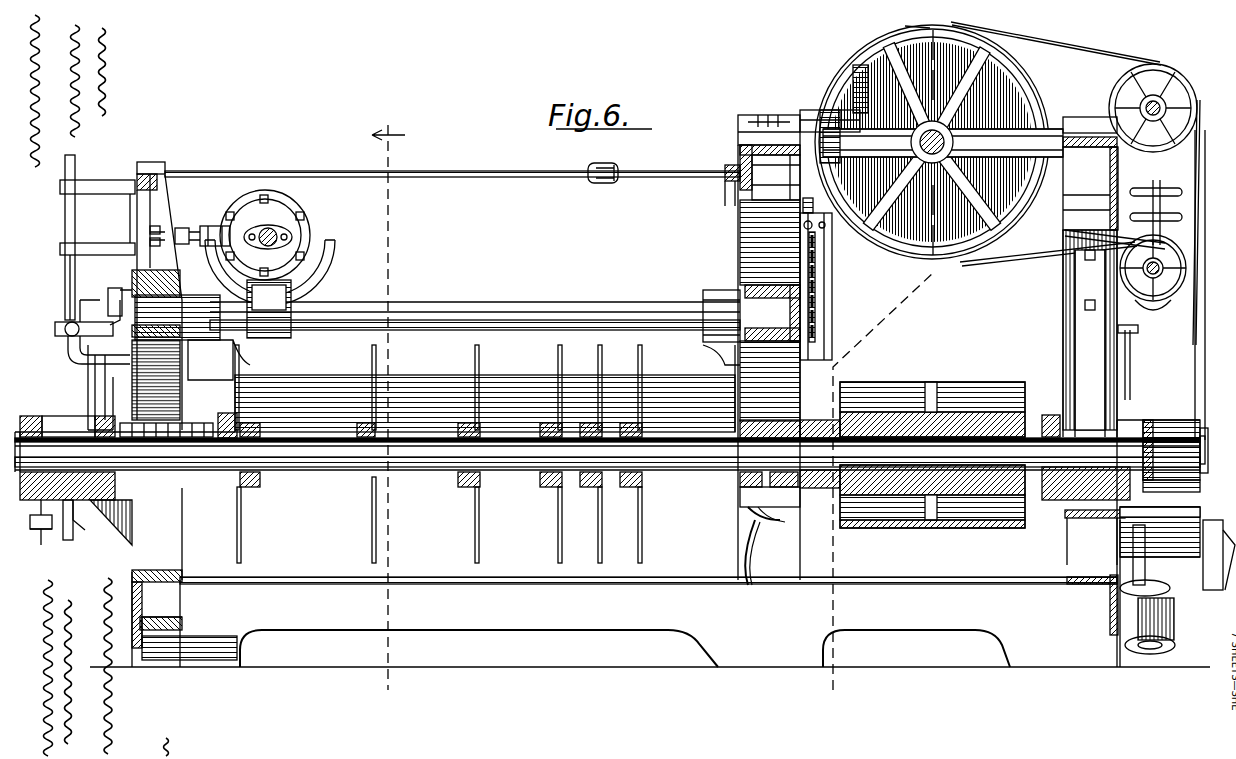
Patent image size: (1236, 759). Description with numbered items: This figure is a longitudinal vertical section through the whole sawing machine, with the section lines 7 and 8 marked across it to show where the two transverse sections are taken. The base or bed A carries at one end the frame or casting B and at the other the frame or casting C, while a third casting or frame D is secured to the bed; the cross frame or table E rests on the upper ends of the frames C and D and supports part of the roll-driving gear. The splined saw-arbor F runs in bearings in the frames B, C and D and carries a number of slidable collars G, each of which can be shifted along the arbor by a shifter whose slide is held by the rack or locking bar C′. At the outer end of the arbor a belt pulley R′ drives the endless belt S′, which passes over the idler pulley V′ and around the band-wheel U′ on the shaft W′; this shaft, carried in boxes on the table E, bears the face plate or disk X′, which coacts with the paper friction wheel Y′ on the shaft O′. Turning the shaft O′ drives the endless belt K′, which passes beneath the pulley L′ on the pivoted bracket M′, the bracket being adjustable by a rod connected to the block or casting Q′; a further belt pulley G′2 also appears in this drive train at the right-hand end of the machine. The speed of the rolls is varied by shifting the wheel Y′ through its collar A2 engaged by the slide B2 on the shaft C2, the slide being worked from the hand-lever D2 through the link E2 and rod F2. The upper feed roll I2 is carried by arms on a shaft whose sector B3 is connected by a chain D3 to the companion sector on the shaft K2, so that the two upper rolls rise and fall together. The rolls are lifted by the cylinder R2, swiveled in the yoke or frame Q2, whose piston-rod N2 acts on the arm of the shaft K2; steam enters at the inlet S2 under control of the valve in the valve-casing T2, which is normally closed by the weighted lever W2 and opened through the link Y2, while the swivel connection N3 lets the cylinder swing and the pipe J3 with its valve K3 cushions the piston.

The base or bed A is at (640, 615).
The frame or casting B is at (172, 545).
The frame or casting C is at (1134, 285).
The rack or locking bar C′ is at (1070, 565).
The shaft C2 is at (1092, 233).
The casting or frame D is at (798, 400).
The hand-lever D2 is at (165, 164).
The chain D3 is at (760, 262).
The cross frame or table E is at (738, 150).
The link E2 is at (485, 177).
The saw-arbor F is at (663, 495).
The rod F2 is at (688, 177).
The collars G is at (520, 478).
The idler pulley G′2 is at (1120, 265).
The upper feed roll I2 is at (485, 385).
The pipe J3 is at (183, 227).
The endless belt K′ is at (1152, 180).
The shaft K2 is at (415, 302).
The valve K3 is at (212, 226).
The pulley L′ is at (1160, 582).
The bracket M′ is at (1130, 570).
The piston-rod N2 is at (268, 224).
The swivel connection N3 is at (130, 318).
The shaft O′ is at (1050, 130).
The block or casting Q′ is at (1170, 625).
The yoke or frame Q2 is at (320, 268).
The belt pulley R′ is at (1150, 430).
The cylinder R2 is at (300, 208).
The endless belt S′ is at (1165, 420).
The steam-inlet S2 is at (76, 168).
The valve-casing T2 is at (60, 336).
The band-wheel U′ is at (975, 255).
The pulley V′ is at (1158, 70).
The shaft W′ is at (937, 130).
The weighted lever W2 is at (85, 360).
The face plate or disk X′ is at (1000, 93).
The paper friction wheel Y′ is at (856, 68).
The link Y2 is at (118, 272).
The collar A2 is at (812, 110).
The slide B2 is at (840, 238).
The sector B3 is at (832, 292).
The section line 7— 7 is at (388, 411).
The section line 8— 8 is at (883, 364).